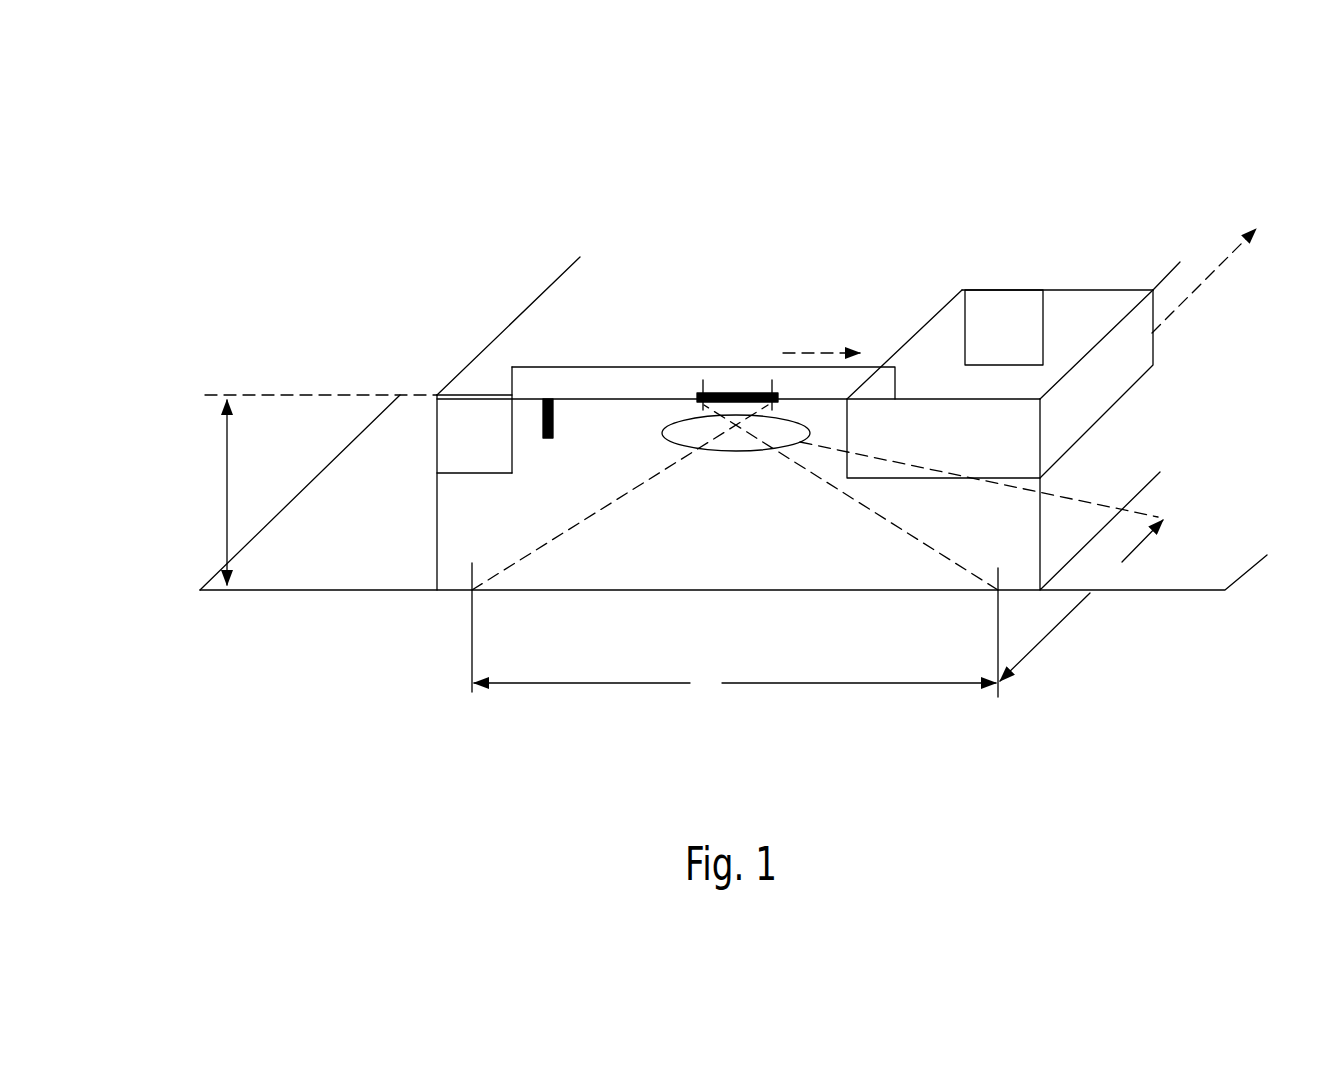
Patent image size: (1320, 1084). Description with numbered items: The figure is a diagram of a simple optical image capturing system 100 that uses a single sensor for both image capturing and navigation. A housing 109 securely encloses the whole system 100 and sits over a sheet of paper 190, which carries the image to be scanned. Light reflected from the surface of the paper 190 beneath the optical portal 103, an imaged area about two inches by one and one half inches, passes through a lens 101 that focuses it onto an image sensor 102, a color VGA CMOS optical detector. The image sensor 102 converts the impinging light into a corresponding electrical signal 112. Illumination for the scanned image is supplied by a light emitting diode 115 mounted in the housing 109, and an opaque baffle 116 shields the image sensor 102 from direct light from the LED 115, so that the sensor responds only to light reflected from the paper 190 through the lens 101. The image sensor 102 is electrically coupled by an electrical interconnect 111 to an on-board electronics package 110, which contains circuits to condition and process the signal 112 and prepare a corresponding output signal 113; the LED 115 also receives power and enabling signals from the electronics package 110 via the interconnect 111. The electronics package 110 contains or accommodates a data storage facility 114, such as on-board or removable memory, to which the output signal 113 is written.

The image capturing system 100 is at (738, 384).
The lens 101 is at (662, 445).
The image sensor 102 is at (730, 388).
The optical portal 103 is at (817, 551).
The housing 109 is at (462, 367).
The electronics package 110 is at (1000, 384).
The electrical interconnect 111 is at (897, 368).
The electrical signal 112 is at (798, 348).
The output signal 113 is at (1200, 280).
The data storage facility 114 is at (1004, 327).
The light emitting diode 115 is at (474, 434).
The opaque baffle 116 is at (545, 393).
The paper 190 is at (318, 492).